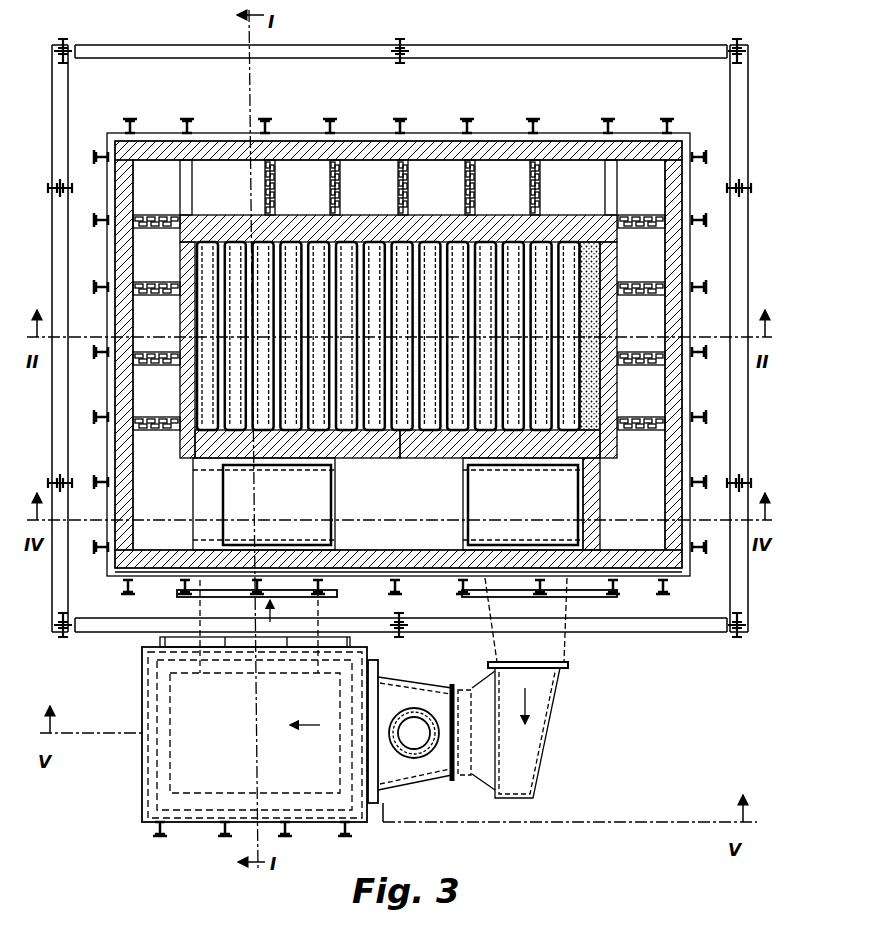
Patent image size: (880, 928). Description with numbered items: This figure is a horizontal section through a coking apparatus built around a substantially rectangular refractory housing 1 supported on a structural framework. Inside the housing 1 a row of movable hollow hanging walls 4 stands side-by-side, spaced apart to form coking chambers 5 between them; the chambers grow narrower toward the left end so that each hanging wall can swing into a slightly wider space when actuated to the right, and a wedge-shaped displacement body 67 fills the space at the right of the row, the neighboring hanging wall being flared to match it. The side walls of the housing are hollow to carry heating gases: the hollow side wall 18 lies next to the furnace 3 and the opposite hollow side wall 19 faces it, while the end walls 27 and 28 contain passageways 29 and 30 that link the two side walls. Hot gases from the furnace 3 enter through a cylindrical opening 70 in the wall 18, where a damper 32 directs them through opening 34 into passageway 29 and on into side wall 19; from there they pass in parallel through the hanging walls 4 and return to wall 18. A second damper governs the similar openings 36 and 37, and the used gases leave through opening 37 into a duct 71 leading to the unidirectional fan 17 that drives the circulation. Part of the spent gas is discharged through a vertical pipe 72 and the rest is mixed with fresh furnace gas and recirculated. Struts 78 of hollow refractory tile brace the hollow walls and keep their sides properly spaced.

The housing 1 is at (432, 158).
The furnace 3 is at (142, 780).
The hanging walls 4 is at (523, 434).
The coking chambers 5 is at (343, 432).
The unidirectional fan 17 is at (470, 775).
The hollow side wall 18 is at (416, 562).
The hollow side wall 19 is at (292, 158).
The end wall 27 is at (125, 318).
The end wall 28 is at (678, 252).
The passageway 29 is at (150, 455).
The passageway 30 is at (645, 444).
The damper 32 is at (300, 490).
The opening 34 is at (180, 500).
The opening 36 is at (618, 492).
The opening 37 is at (485, 488).
The displacement body 67 is at (603, 270).
The cylindrical opening 70 is at (300, 607).
The duct 71 is at (517, 592).
The vertical pipe 72 is at (414, 746).
The struts 78 is at (532, 183).